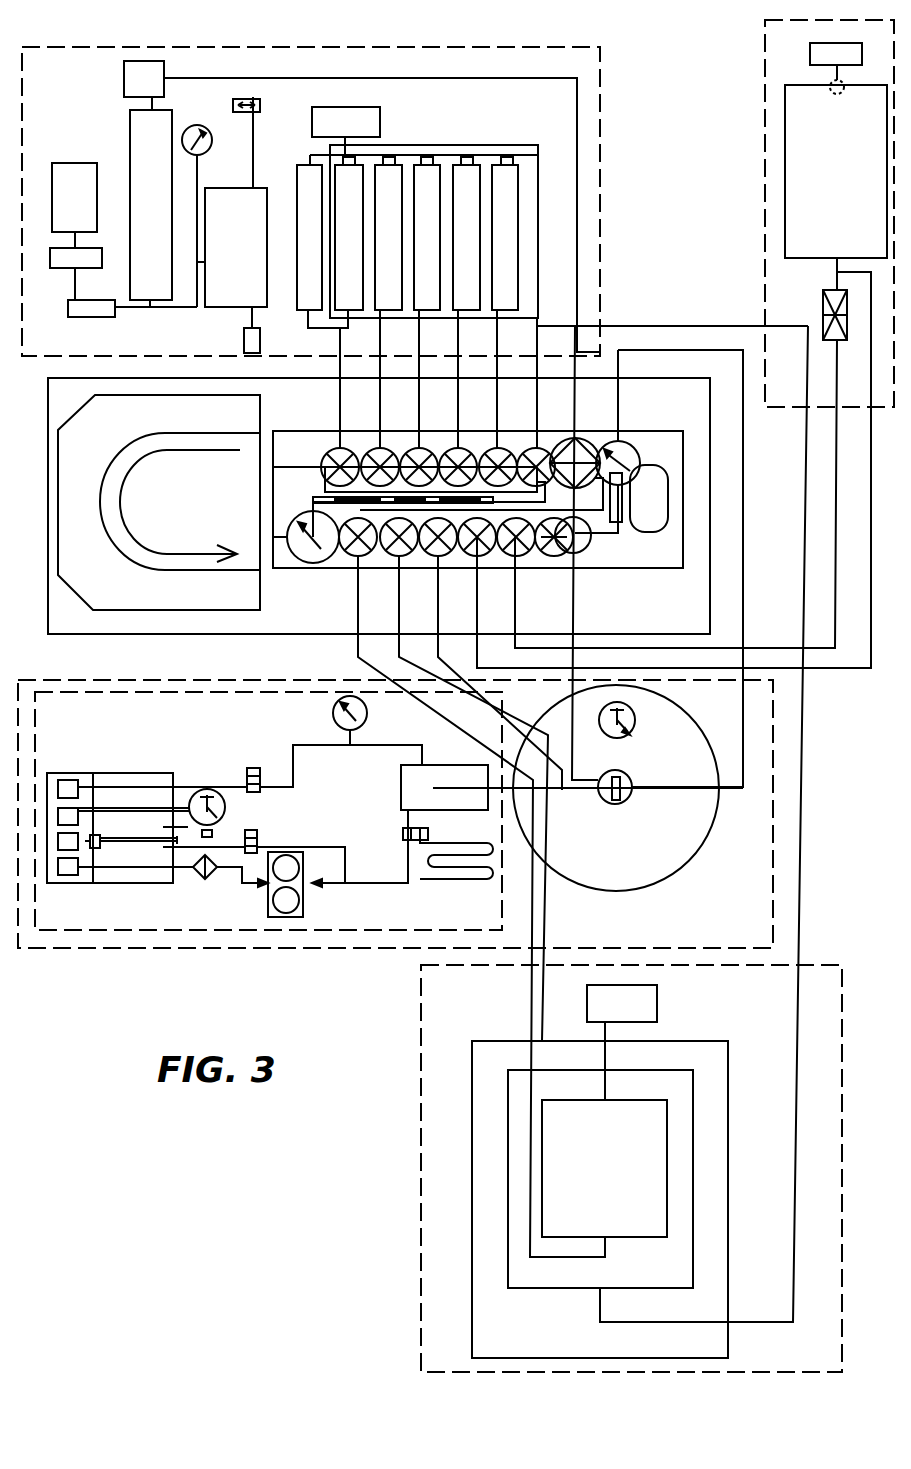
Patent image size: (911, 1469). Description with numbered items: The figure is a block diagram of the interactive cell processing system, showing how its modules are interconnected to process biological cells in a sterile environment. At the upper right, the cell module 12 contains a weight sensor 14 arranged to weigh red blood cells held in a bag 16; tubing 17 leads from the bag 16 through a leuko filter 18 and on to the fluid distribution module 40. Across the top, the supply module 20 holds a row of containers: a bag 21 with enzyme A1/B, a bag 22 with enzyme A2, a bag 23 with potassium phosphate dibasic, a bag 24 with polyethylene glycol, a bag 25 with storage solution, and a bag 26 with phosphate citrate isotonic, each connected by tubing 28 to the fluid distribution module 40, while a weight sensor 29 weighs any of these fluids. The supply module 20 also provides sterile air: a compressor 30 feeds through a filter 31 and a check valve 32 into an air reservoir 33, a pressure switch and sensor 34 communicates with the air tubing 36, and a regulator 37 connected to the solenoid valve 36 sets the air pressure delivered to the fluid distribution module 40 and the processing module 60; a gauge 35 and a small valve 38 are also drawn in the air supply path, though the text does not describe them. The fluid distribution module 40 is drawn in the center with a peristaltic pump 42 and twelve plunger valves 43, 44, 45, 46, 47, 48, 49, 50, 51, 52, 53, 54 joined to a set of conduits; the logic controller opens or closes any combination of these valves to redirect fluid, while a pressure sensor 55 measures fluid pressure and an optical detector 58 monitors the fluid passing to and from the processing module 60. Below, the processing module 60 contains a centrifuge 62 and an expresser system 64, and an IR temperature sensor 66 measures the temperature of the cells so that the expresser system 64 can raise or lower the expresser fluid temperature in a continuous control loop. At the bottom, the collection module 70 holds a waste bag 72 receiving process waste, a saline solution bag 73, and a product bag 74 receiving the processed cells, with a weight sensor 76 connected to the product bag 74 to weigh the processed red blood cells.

The cell module 12 is at (793, 408).
The weight sensor 14 is at (810, 58).
The bag 16 is at (795, 162).
The tubing 17 is at (837, 268).
The leuko filter 18 is at (823, 335).
The supply module 20 is at (35, 358).
The bag with enzyme A1/B 21 is at (297, 178).
The bag with enzyme A2 22 is at (355, 160).
The bag with potassium phosphate dibasic 23 is at (395, 160).
The bag with polyethylene glycol 24 is at (435, 160).
The bag with storage solution 25 is at (475, 160).
The bag with phosphate citrate isotonic 26 is at (515, 160).
The tubing 28 is at (498, 337).
The weight sensor 29 is at (380, 120).
The compressor 30 is at (68, 163).
The filter 31 is at (60, 268).
The check valve 32 is at (100, 317).
The air reservoir 33 is at (130, 135).
The pressure switch and sensor 34 is at (124, 72).
The pressure gauge 35 is at (195, 125).
The air tubing 36 is at (577, 95).
The regulator 37 is at (230, 188).
The valve 38 is at (260, 105).
The fluid distribution module 40 is at (48, 555).
The peristaltic pump 42 is at (112, 582).
The plunger valve 43 is at (328, 452).
The plunger valve 44 is at (368, 452).
The plunger valve 45 is at (407, 452).
The plunger valve 46 is at (446, 452).
The plunger valve 47 is at (486, 452).
The plunger valve 48 is at (524, 452).
The plunger valve 49 is at (347, 552).
The plunger valve 50 is at (388, 552).
The plunger valve 51 is at (427, 552).
The plunger valve 52 is at (466, 552).
The plunger valve 53 is at (505, 552).
The plunger valve 54 is at (543, 552).
The pressure sensor 55 is at (300, 560).
The optical detector 58 is at (655, 465).
The processing module 60 is at (215, 948).
The centrifuge 62 is at (629, 852).
The expresser system 64 is at (55, 932).
The IR temperature sensor 66 is at (635, 716).
The collection module 70 is at (421, 1160).
The waste bag 72 is at (472, 1333).
The saline solution bag 73 is at (508, 1262).
The product bag 74 is at (667, 1155).
The weight sensor 76 is at (657, 992).